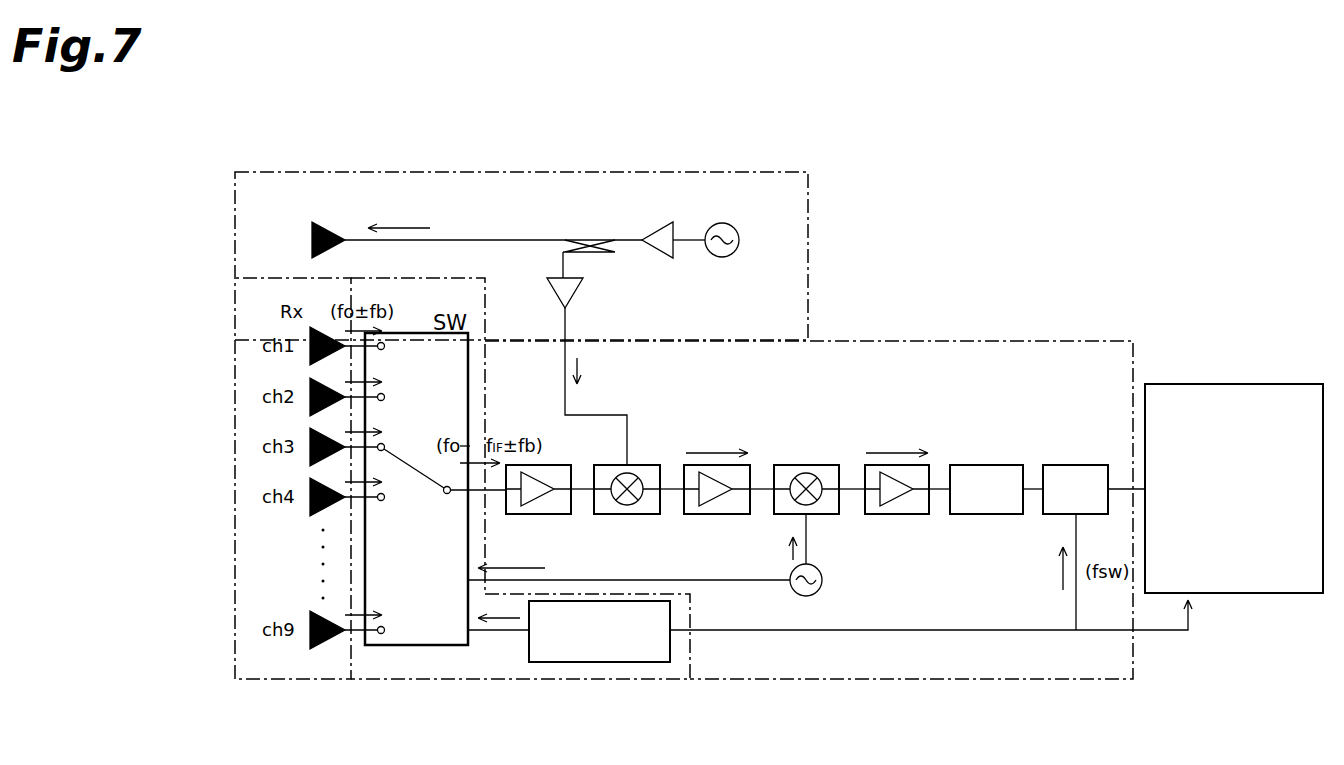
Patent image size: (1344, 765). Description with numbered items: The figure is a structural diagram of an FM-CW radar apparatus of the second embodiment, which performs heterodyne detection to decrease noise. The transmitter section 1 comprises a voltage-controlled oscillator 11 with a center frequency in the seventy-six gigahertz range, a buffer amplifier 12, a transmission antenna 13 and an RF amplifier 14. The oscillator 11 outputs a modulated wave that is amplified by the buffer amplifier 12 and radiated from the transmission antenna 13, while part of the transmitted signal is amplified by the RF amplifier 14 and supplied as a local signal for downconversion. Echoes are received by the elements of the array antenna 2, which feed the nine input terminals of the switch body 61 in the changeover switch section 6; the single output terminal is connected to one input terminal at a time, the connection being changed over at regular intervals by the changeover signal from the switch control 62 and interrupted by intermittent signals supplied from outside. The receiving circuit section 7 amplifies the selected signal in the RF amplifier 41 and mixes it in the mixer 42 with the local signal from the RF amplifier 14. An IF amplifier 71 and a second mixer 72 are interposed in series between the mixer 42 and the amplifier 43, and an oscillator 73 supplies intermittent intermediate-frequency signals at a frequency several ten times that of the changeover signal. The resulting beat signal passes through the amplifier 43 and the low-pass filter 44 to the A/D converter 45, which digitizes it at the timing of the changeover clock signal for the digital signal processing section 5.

The transmitter section 1 is at (518, 172).
The voltage-controlled oscillator 11 is at (722, 258).
The buffer amplifier 12 is at (653, 229).
The transmission antenna 13 is at (324, 224).
The RF amplifier 14 is at (583, 292).
The array antenna 2 is at (293, 680).
The changeover switch section 6 is at (428, 680).
The switch body 61 is at (415, 646).
The switch control 62 is at (606, 663).
The receiving circuit section 7 is at (770, 680).
The RF amplifier 41 is at (545, 515).
The mixer 42 is at (630, 515).
The IF amplifier 71 is at (725, 515).
The second mixer 72 is at (812, 515).
The oscillator 73 is at (790, 592).
The amplifier 43 is at (900, 515).
The filter 44 is at (985, 515).
The A/D converter 45 is at (1055, 515).
The digital signal processing section 5 is at (1233, 594).